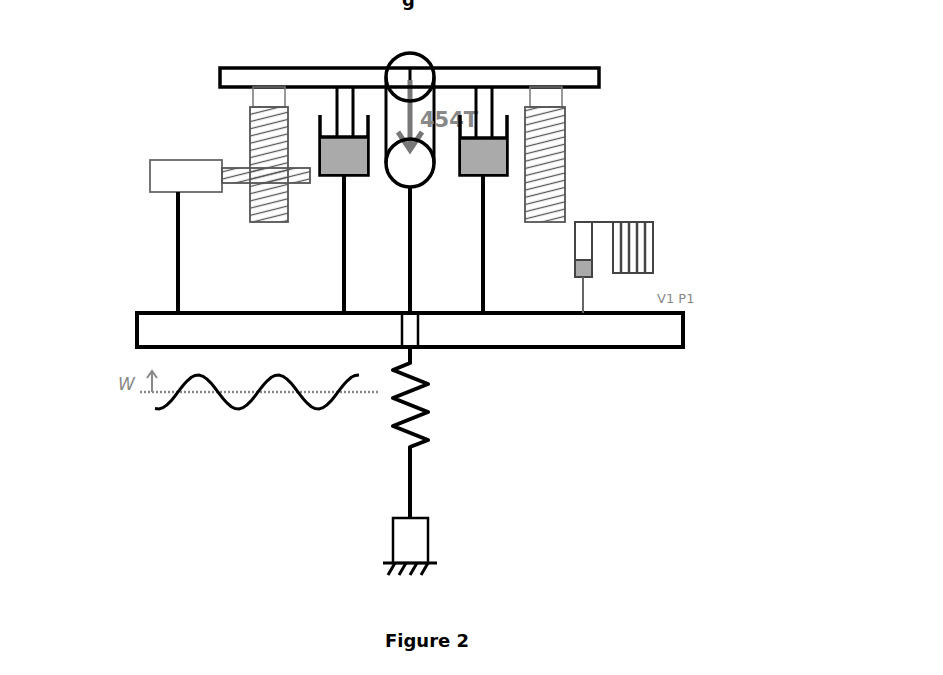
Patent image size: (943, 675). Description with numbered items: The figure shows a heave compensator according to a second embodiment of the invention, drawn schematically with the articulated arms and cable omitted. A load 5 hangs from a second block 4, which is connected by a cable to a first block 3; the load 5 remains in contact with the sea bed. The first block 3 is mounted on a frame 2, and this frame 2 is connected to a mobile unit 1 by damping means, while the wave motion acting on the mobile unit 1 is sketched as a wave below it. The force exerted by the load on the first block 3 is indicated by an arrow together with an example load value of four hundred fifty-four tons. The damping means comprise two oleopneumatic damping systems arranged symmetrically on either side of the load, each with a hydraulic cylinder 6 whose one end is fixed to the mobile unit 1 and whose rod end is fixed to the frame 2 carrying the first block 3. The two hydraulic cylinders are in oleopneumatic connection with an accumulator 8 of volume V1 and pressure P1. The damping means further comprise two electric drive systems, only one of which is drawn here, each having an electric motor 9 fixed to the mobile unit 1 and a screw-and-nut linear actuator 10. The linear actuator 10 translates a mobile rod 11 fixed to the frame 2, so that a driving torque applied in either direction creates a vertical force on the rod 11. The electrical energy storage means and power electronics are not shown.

The mobile unit 1 is at (647, 330).
The frame 2 is at (598, 71).
The first block 3 is at (413, 63).
The second block 4 is at (413, 162).
The load 5 is at (413, 538).
The hydraulic cylinder 6 is at (486, 178).
The accumulator 8 is at (628, 243).
The electric motor 9 is at (185, 181).
The screw-and-nut linear actuator 10 is at (273, 168).
The mobile rod 11 is at (550, 123).